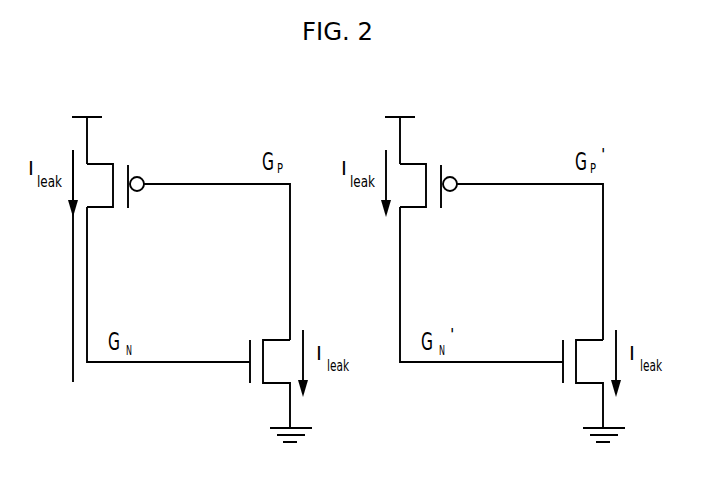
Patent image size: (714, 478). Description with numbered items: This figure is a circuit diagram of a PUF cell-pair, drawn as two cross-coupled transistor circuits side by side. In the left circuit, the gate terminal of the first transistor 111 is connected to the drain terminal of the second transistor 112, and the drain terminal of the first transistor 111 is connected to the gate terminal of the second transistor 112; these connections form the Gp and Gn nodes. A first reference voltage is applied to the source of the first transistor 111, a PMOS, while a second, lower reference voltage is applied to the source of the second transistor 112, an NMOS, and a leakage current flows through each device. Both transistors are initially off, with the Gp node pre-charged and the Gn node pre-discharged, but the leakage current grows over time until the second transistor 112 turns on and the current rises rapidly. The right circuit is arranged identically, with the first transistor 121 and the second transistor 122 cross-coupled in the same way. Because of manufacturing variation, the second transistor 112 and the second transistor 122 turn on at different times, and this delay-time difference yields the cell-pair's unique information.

The first transistor 111 is at (107, 163).
The second transistor 112 is at (278, 338).
The first transistor 121 is at (430, 159).
The second transistor 122 is at (572, 334).